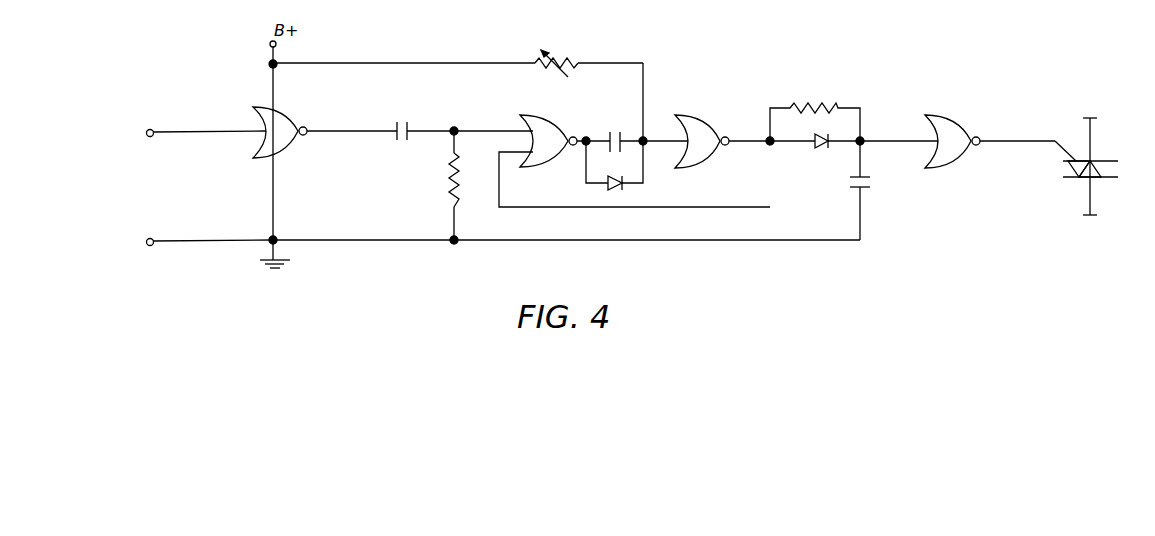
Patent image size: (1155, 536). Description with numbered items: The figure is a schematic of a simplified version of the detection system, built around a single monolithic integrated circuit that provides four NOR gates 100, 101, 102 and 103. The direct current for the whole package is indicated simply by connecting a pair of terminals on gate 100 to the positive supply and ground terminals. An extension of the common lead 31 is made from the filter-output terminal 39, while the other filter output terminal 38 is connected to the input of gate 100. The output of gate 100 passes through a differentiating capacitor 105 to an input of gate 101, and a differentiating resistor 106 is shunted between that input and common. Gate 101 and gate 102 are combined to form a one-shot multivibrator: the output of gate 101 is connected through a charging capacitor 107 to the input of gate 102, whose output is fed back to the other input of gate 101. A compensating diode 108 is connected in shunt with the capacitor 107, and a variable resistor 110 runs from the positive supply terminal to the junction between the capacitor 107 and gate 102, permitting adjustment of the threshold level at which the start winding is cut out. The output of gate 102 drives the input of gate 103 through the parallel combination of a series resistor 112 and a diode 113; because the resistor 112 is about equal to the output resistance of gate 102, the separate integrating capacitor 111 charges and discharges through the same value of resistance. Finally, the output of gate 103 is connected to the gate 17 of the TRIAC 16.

The input terminal 38 is at (163, 115).
The filter-output terminal 39 is at (163, 223).
The common lead 31 is at (386, 242).
The NOR gate 100 is at (293, 121).
The differentiating capacitor 105 is at (412, 125).
The differentiating resistor 106 is at (450, 188).
The NOR gate 101 is at (555, 126).
The charging capacitor 107 is at (628, 112).
The compensating diode 108 is at (632, 188).
The NOR gate 102 is at (717, 122).
The variable resistor 110 is at (562, 56).
The series resistor 112 is at (835, 85).
The diode 113 is at (814, 148).
The integrating capacitor 111 is at (866, 184).
The NOR gate 103 is at (962, 124).
The gate 17 is at (1058, 148).
The TRIAC 16 is at (1106, 146).